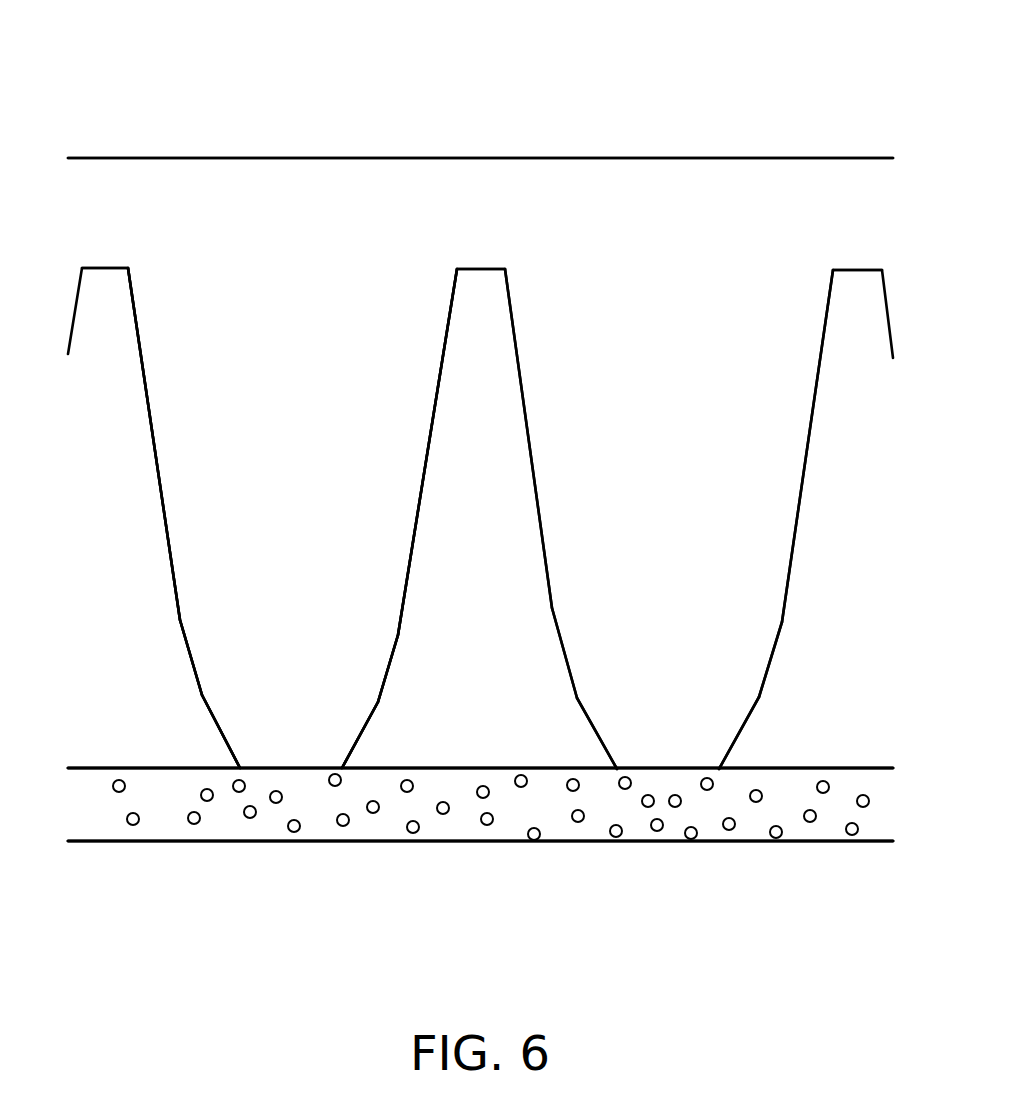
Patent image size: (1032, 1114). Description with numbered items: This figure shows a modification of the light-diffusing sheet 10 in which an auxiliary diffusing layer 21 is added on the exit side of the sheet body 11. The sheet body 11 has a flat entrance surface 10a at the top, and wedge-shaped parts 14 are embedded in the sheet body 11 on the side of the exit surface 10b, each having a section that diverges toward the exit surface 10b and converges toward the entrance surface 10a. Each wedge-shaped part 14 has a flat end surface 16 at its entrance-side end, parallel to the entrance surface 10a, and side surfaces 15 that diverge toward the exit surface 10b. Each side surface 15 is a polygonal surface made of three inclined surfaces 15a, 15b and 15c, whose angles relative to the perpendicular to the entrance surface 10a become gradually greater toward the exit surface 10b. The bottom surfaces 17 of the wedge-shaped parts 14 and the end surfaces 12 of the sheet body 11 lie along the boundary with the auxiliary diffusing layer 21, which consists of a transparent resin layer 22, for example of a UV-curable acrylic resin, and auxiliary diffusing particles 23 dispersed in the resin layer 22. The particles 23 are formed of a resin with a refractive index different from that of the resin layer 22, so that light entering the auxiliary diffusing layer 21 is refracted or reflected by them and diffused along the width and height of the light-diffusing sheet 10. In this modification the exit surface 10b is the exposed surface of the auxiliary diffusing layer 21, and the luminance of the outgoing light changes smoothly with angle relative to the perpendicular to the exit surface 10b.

The light-diffusing sheet 10 is at (397, 92).
The entrance surface 10a is at (190, 157).
The exit surface 10b is at (260, 842).
The sheet body 11 is at (303, 172).
The end surface 12 is at (303, 769).
The wedge-shaped part 14 is at (130, 422).
The side surface 15 is at (138, 317).
The inclined surface 15a is at (162, 477).
The inclined surface 15b is at (195, 663).
The inclined surface 15c is at (225, 735).
The flat end surface 16 is at (105, 267).
The bottom surface 17 is at (170, 769).
The auxiliary diffusing layer 21 is at (480, 875).
The transparent resin layer 22 is at (647, 842).
The auxiliary diffusing particles 23 is at (693, 839).